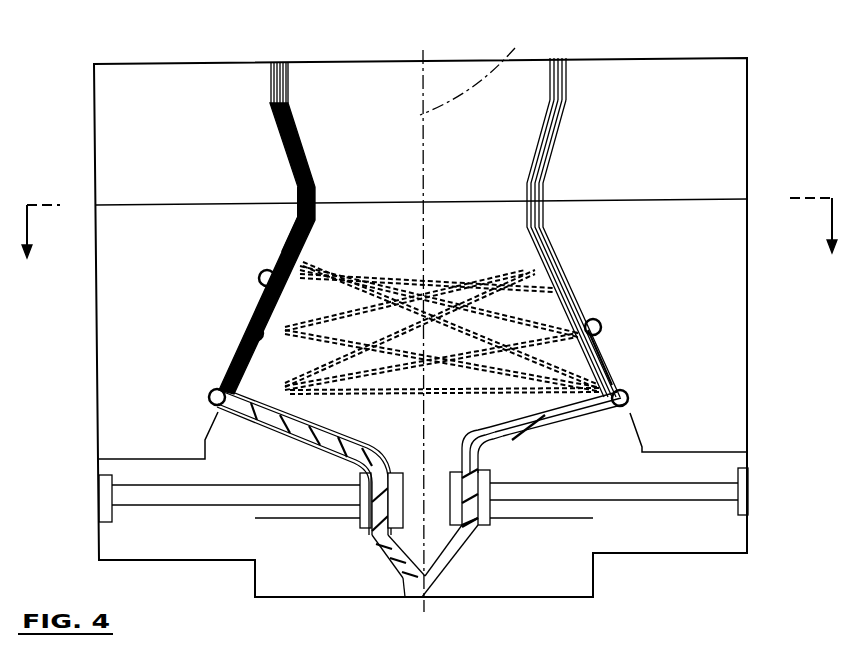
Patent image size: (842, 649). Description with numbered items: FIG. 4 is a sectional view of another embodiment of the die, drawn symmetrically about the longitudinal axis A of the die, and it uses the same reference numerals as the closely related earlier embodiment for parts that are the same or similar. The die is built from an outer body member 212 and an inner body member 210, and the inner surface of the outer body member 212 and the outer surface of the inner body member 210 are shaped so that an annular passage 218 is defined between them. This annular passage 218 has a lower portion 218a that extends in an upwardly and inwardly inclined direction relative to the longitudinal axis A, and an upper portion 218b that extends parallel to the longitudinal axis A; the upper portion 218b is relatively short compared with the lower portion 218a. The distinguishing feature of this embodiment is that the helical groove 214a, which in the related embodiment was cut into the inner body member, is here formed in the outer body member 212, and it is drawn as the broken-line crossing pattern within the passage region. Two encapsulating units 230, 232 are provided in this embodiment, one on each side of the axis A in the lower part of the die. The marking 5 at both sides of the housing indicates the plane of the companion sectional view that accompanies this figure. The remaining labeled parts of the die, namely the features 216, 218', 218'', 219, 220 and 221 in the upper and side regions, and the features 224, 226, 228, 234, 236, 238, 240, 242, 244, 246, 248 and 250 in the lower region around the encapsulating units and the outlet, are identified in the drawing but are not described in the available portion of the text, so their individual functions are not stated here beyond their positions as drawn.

The section line 5- 5 is at (427, 245).
The inner body member 210 is at (380, 218).
The outer body member 212 is at (130, 220).
The helical groove 214a is at (312, 377).
The lower guide eyelet 216 is at (615, 398).
The annular passage 218 is at (221, 248).
The lower portion of the annular passage 218a is at (240, 352).
The upper portion of the annular passage 218b is at (297, 212).
The second guide arm 218' is at (600, 248).
The second guide arm lower portion 218'' is at (644, 357).
The first guide strip 219 is at (338, 61).
The second guide strip 220 is at (560, 58).
The housing wall 221 is at (208, 84).
The outlet nozzle 224 is at (400, 593).
The first nozzle wall 226 is at (385, 566).
The second nozzle wall 228 is at (455, 595).
The encapsulating unit 230 is at (365, 487).
The encapsulating unit 232 is at (487, 470).
The first hinge portion 234 is at (373, 534).
The second hinge portion 236 is at (481, 530).
The first support rod 238 is at (160, 490).
The second support rod 240 is at (670, 485).
The first flexible plate 242 is at (398, 470).
The curved plate portion 244 is at (460, 472).
The first pivot post 246 is at (293, 420).
The second flexible plate 248 is at (553, 430).
The guide eyelets 250 is at (253, 328).
The longitudinal axis A is at (473, 71).